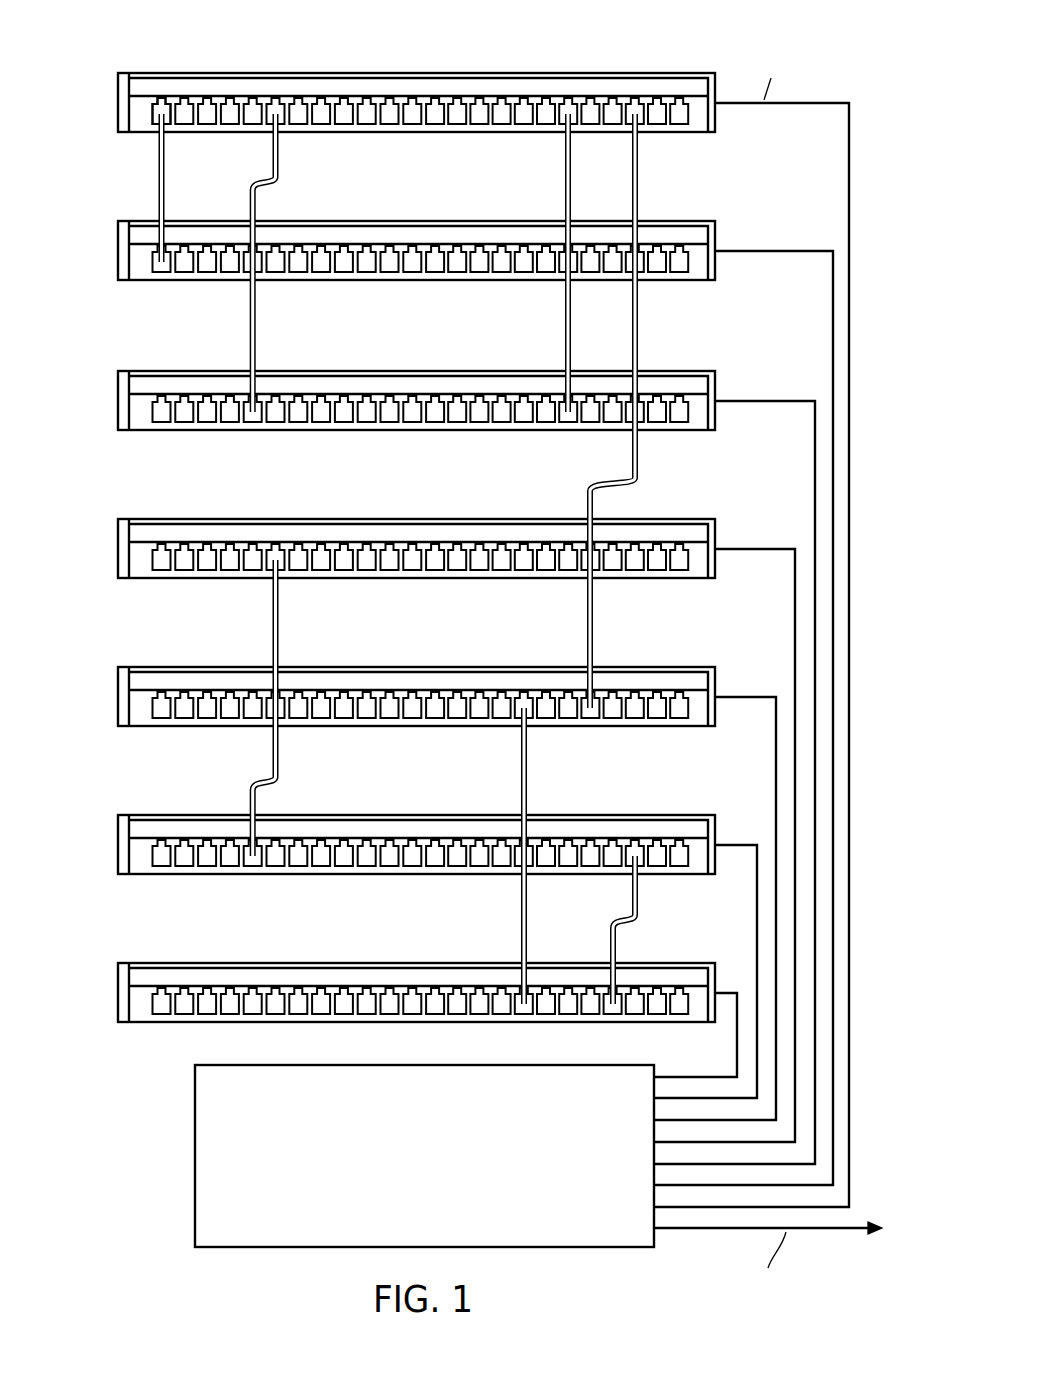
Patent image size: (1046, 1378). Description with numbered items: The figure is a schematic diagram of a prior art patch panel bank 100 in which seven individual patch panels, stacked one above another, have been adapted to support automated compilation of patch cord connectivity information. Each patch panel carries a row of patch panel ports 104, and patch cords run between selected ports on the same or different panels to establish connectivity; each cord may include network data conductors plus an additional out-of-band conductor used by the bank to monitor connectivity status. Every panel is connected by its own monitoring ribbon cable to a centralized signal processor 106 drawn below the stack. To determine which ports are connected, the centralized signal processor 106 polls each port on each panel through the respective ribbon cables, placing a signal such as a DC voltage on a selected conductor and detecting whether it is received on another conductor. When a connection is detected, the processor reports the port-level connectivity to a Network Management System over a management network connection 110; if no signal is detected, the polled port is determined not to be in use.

The patch panel bank 100 is at (272, 46).
The patch panel port 104 is at (160, 100).
The centralized signal processor 106 is at (195, 1157).
The management network connection 110 is at (846, 1226).